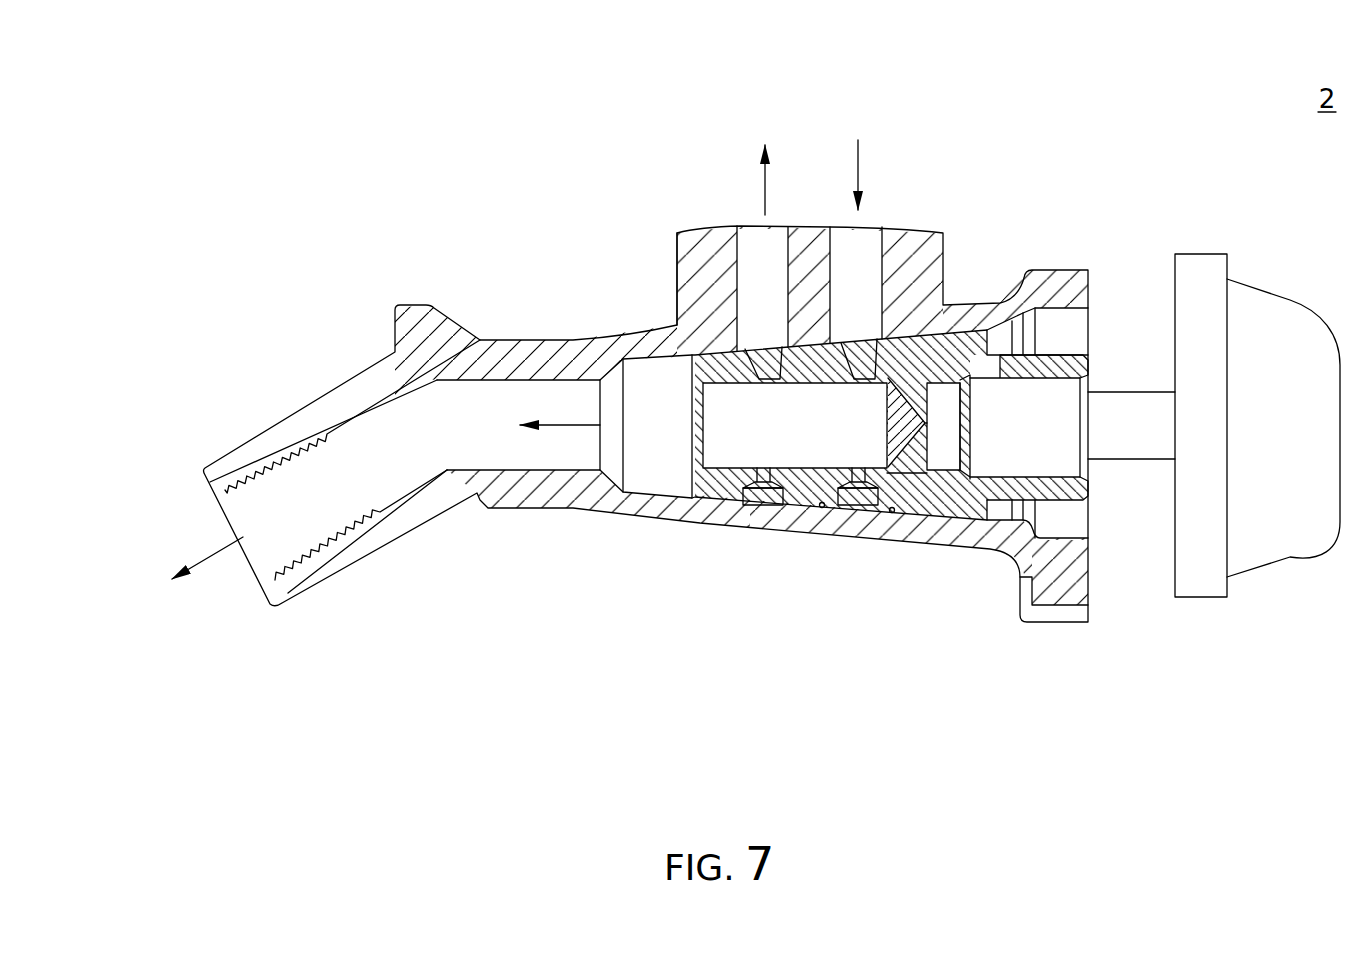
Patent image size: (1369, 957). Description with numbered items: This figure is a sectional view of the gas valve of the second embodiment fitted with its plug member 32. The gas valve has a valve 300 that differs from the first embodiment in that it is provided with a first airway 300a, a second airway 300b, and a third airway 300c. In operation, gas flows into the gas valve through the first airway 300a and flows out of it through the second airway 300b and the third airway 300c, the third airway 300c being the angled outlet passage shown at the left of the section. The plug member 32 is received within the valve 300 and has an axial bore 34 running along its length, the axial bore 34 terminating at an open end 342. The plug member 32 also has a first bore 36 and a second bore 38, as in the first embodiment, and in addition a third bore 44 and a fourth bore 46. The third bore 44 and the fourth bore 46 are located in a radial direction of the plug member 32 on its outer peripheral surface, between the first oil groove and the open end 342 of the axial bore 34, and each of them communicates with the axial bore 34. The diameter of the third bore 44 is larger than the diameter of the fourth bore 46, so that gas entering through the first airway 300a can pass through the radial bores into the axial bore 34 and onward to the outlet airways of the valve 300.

The valve 300 is at (673, 265).
The first airway 300a is at (868, 253).
The second airway 300b is at (768, 250).
The third airway 300c is at (387, 435).
The plug member 32 is at (940, 497).
The axial bore 34 is at (725, 445).
The open end 342 is at (693, 437).
The first bore 36 is at (857, 372).
The second bore 38 is at (858, 498).
The third bore 44 is at (760, 372).
The fourth bore 46 is at (760, 497).